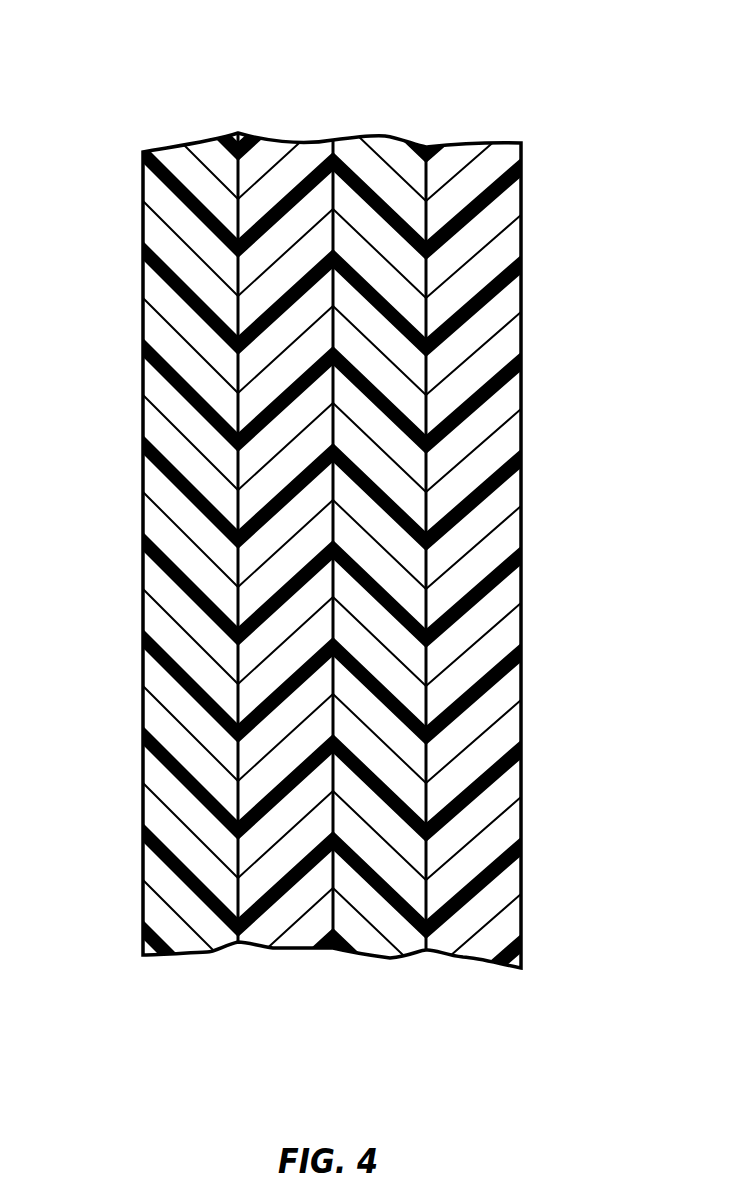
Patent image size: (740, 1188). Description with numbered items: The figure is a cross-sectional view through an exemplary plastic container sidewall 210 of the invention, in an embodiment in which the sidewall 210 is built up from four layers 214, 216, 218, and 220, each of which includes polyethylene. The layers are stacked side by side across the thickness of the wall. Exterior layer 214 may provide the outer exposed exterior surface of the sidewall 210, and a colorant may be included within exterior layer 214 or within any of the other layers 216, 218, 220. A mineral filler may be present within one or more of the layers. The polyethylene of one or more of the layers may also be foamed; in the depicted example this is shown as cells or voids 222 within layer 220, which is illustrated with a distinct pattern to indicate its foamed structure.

The sidewall 210 is at (128, 106).
The exterior layer 214 is at (177, 935).
The layer 216 is at (278, 930).
The layer 218 is at (370, 937).
The layer 220 is at (473, 953).
The cells or voids 222 is at (482, 505).